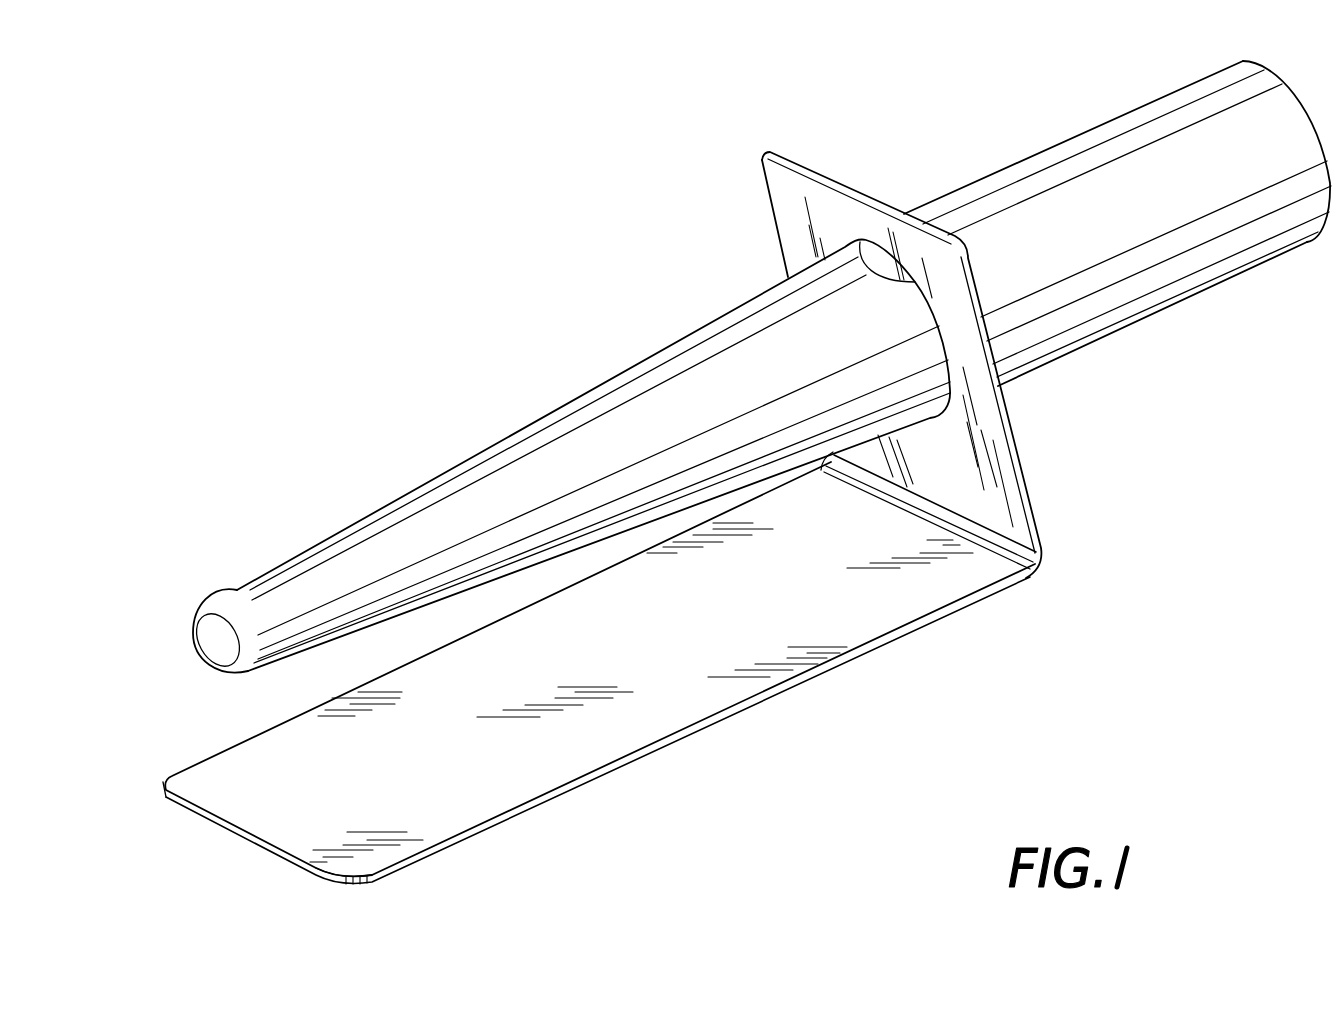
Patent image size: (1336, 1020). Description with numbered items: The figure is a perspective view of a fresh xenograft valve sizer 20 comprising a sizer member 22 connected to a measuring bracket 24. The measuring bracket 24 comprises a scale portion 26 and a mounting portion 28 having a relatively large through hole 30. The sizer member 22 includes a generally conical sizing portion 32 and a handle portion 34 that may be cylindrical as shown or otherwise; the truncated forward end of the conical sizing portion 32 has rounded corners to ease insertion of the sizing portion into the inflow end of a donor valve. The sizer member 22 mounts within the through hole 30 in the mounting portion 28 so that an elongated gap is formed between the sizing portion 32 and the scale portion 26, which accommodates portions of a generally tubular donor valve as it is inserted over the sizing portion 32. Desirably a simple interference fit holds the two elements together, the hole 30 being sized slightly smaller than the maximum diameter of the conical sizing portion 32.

The valve sizer 20 is at (624, 213).
The sizer member 22 is at (212, 565).
The measuring bracket 24 is at (398, 885).
The scale portion 26 is at (672, 640).
The mounting portion 28 is at (955, 476).
The through hole 30 is at (858, 240).
The conical sizing portion 32 is at (792, 379).
The handle portion 34 is at (1153, 212).